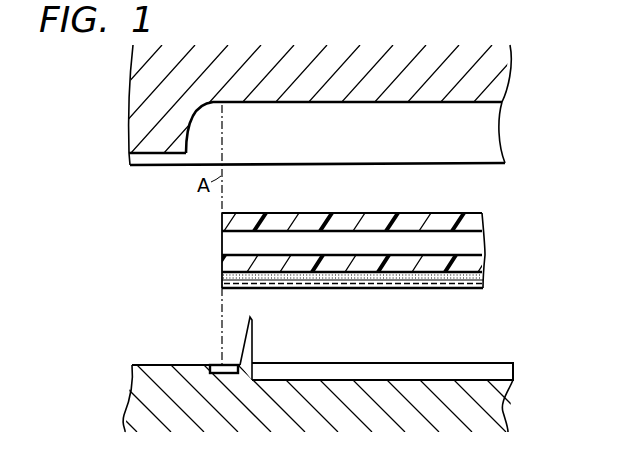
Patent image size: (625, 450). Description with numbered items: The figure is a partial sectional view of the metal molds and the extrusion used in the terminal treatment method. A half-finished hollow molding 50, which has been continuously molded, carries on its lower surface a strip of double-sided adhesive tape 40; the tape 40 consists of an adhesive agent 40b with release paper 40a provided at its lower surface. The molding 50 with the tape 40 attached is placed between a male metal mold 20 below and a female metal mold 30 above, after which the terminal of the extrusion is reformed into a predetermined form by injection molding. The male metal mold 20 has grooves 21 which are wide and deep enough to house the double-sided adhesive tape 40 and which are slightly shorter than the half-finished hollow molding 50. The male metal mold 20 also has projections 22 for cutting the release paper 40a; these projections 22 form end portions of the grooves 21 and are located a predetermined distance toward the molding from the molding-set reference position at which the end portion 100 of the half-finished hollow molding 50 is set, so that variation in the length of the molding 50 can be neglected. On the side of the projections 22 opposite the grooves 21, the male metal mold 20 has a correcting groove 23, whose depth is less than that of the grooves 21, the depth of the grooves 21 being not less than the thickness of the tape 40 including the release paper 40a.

The male metal mold 20 is at (311, 374).
The grooves 21 is at (414, 363).
The projections 22 is at (247, 353).
The correcting grooves 23 is at (218, 365).
The female metal mold 30 is at (503, 81).
The double-sided adhesive tape 40 is at (315, 247).
The release paper 40a is at (228, 276).
The adhesive agent 40b is at (237, 273).
The half-finished hollow molding 50 is at (247, 215).
The end portion 100 is at (225, 284).